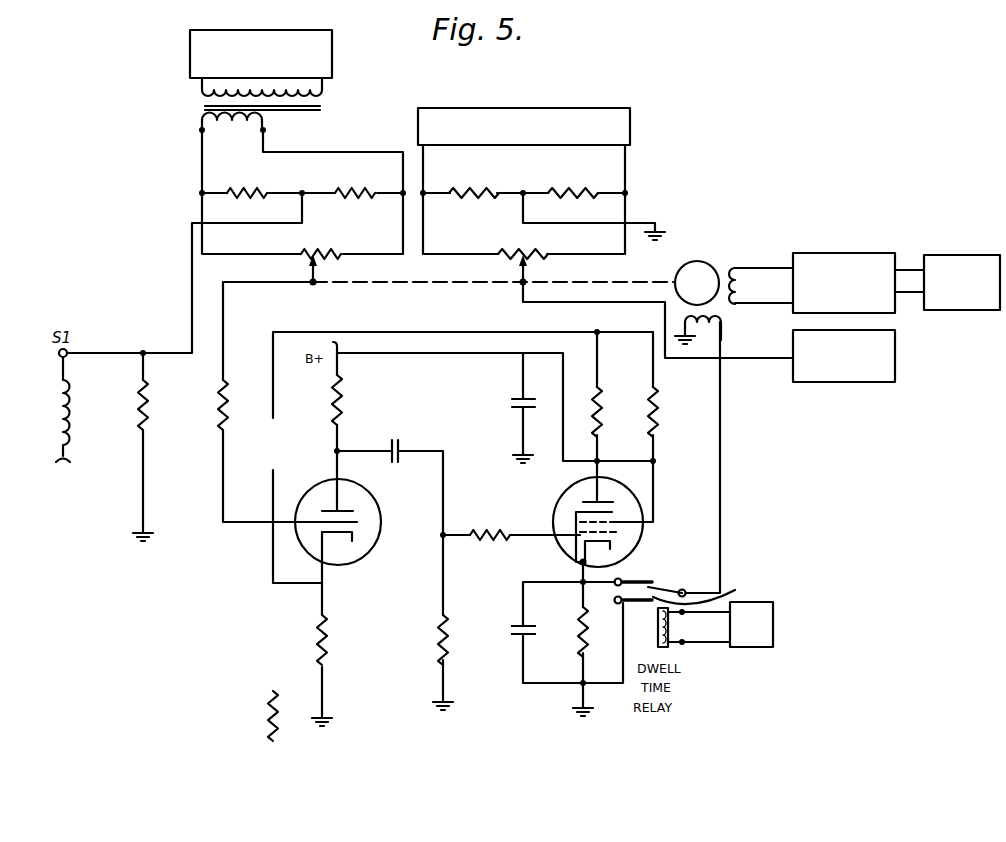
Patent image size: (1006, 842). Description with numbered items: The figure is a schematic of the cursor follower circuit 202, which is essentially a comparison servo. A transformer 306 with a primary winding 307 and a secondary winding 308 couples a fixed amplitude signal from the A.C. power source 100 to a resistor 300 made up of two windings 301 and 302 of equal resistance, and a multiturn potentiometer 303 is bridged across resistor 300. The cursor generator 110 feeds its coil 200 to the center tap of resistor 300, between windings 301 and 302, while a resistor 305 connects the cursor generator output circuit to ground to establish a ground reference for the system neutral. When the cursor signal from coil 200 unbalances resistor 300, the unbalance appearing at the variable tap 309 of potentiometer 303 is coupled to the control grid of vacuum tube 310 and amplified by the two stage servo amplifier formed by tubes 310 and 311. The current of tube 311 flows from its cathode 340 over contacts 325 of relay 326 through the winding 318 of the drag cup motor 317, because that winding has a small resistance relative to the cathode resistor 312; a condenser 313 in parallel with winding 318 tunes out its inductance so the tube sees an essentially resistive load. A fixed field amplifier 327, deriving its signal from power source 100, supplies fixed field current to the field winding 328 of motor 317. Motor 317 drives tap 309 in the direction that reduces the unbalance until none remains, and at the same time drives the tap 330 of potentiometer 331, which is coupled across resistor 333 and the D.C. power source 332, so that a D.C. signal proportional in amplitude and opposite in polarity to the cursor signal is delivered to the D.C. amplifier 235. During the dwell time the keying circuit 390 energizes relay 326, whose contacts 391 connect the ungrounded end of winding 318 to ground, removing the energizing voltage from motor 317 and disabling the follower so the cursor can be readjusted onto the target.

The A.C. power source 100 is at (190, 47).
The primary winding 307 is at (325, 92).
The transformer 306 is at (204, 109).
The secondary winding 308 is at (266, 121).
The winding 301 is at (254, 178).
The resistor 300 is at (316, 179).
The winding 302 is at (357, 178).
The multiturn potentiometer 303 is at (333, 250).
The variable tap 309 is at (318, 267).
The D.C. power source 332 is at (592, 105).
The resistor 333 is at (533, 177).
The potentiometer 331 is at (520, 250).
The tap 330 is at (516, 263).
The drag cup motor 317 is at (697, 261).
The field winding 328 is at (736, 266).
The fixed field amplifier 327 is at (856, 243).
The winding 318 is at (722, 322).
The D.C. amplifier 235 is at (876, 384).
The coil 200 is at (56, 383).
The cursor generator 110 is at (59, 426).
The resistor 305 is at (149, 399).
The vacuum tube 310 is at (368, 508).
The vacuum tube 311 is at (645, 538).
The cathode 340 is at (582, 562).
The contacts 325 is at (645, 585).
The contacts 391 is at (711, 592).
The relay 326 is at (658, 631).
The condenser 313 is at (511, 634).
The cathode resistor 312 is at (580, 650).
The keying circuit 390 is at (757, 649).
The cursor follower circuit 202 is at (835, 531).